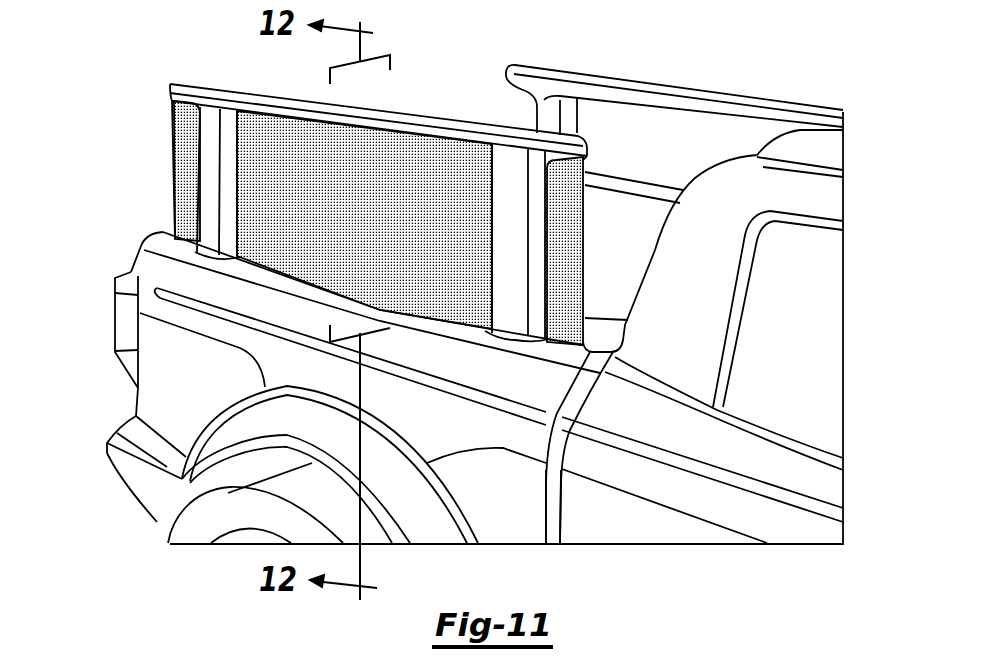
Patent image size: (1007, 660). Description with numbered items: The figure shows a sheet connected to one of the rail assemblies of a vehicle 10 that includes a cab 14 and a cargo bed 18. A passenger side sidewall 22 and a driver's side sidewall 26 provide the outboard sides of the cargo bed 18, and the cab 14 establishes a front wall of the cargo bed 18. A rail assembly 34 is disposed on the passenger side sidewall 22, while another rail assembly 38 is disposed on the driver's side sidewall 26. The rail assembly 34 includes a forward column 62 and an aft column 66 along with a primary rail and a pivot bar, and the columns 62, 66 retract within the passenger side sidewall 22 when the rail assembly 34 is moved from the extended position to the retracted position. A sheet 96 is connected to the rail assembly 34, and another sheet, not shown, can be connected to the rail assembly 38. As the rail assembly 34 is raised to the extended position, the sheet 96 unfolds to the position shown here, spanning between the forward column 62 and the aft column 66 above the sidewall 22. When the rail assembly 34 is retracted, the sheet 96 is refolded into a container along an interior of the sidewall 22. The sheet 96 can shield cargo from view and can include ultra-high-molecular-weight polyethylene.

The vehicle 10 is at (690, 490).
The cab 14 is at (607, 520).
The cargo bed 18 is at (168, 401).
The passenger side sidewall 22 is at (518, 447).
The driver's side sidewall 26 is at (617, 225).
The rail assembly 34 is at (514, 305).
The rail assembly 38 is at (713, 104).
The forward column 62 is at (517, 292).
The aft column 66 is at (208, 192).
The sheet 96 is at (410, 157).